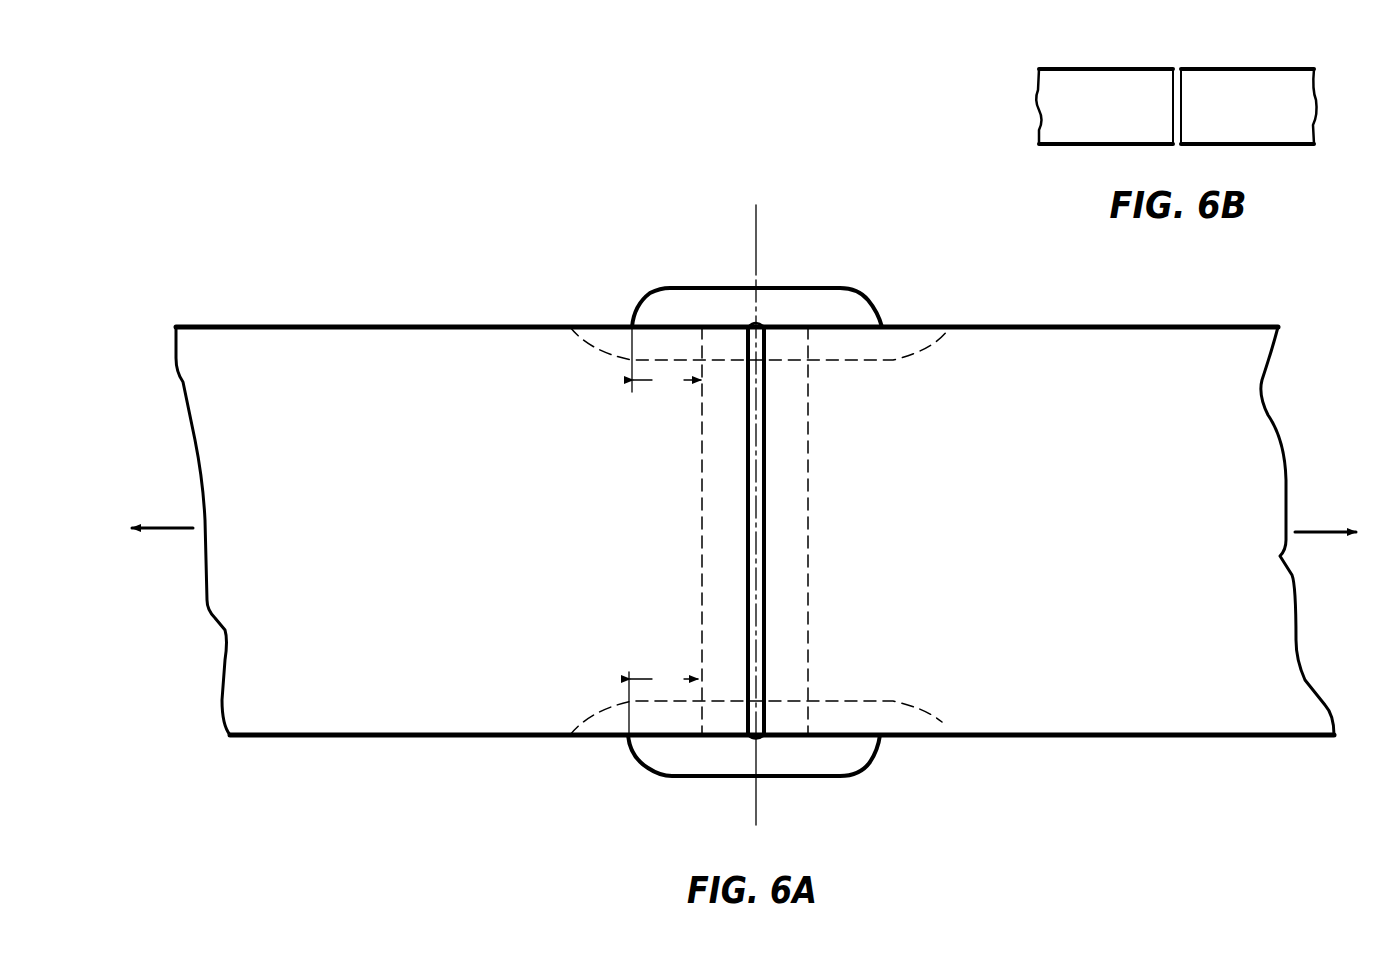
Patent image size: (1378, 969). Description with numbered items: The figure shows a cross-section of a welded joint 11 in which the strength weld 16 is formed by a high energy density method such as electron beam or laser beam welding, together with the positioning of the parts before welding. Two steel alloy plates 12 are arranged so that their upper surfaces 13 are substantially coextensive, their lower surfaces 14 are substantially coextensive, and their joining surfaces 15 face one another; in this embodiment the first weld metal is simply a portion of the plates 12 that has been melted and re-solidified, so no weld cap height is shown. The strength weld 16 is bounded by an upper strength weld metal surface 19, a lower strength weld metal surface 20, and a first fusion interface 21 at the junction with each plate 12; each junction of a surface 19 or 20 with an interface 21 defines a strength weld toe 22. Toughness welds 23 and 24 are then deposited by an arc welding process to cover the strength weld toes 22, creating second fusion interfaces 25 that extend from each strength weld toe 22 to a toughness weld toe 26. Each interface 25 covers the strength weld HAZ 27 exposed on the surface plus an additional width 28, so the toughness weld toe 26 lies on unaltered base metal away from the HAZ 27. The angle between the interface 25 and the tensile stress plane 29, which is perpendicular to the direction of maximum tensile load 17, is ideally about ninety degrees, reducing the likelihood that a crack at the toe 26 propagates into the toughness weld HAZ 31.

In FIG. 6A, the welded joint 11 is at (488, 236).
In FIG. 6A, the steel alloy plate 12 is at (417, 340).
In FIG. 6A, the upper surface 13 is at (292, 326).
In FIG. 6B, the upper surface 13 is at (1065, 68).
In FIG. 6A, the lower surface 14 is at (366, 736).
In FIG. 6B, the lower surface 14 is at (1068, 145).
In FIG. 6B, the joining surface 15 is at (1173, 68).
In FIG. 6A, the strength weld 16 is at (758, 428).
In FIG. 6A, the direction of maximum tensile load 17 is at (174, 534).
In FIG. 6A, the upper strength weld metal surface 19 is at (761, 323).
In FIG. 6A, the lower strength weld metal surface 20 is at (747, 738).
In FIG. 6A, the first fusion interface 21 is at (765, 544).
In FIG. 6A, the strength weld toe 22 is at (763, 325).
In FIG. 6A, the toughness weld 23 is at (855, 300).
In FIG. 6A, the toughness weld 24 is at (836, 763).
In FIG. 6A, the second fusion interface 25 is at (665, 332).
In FIG. 6A, the toughness weld toe 26 is at (632, 326).
In FIG. 6A, the strength weld HAZ 27 is at (723, 377).
In FIG. 6A, the additional width 28 is at (665, 530).
In FIG. 6A, the tensile stress plane 29 is at (756, 227).
In FIG. 6A, the toughness weld HAZ 31 is at (936, 337).